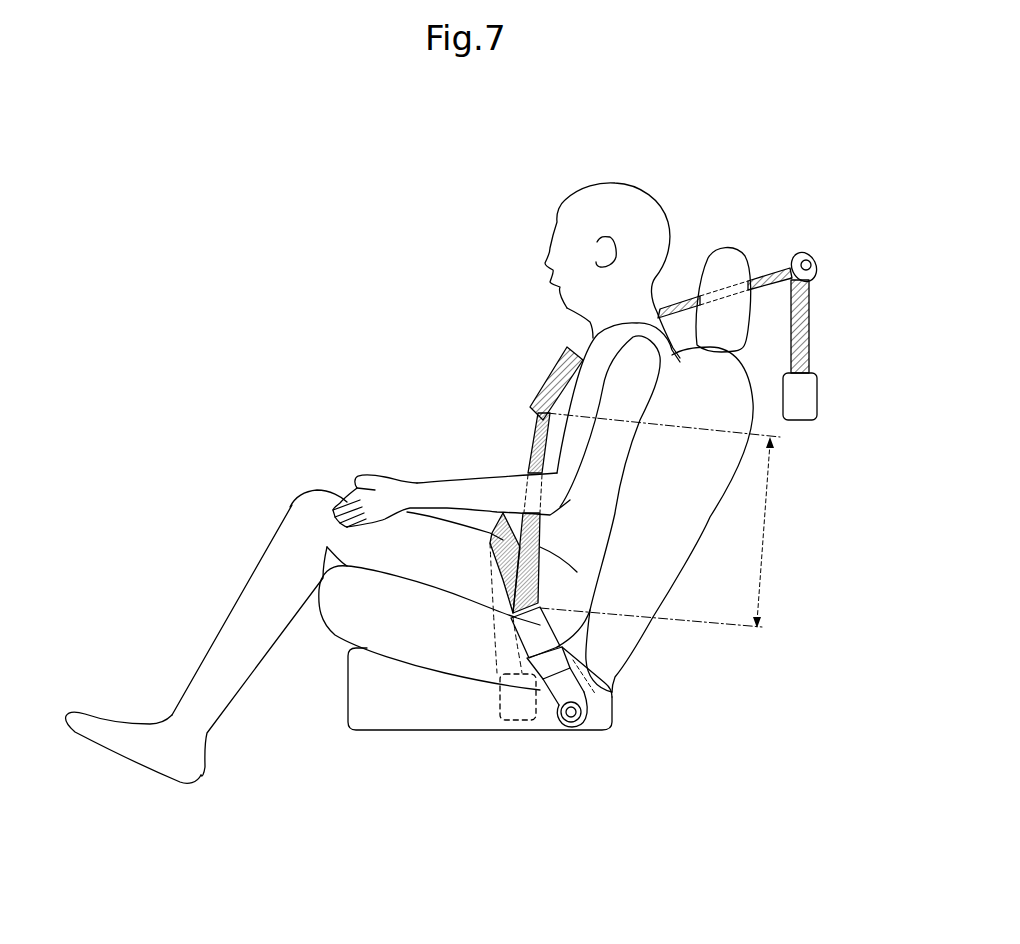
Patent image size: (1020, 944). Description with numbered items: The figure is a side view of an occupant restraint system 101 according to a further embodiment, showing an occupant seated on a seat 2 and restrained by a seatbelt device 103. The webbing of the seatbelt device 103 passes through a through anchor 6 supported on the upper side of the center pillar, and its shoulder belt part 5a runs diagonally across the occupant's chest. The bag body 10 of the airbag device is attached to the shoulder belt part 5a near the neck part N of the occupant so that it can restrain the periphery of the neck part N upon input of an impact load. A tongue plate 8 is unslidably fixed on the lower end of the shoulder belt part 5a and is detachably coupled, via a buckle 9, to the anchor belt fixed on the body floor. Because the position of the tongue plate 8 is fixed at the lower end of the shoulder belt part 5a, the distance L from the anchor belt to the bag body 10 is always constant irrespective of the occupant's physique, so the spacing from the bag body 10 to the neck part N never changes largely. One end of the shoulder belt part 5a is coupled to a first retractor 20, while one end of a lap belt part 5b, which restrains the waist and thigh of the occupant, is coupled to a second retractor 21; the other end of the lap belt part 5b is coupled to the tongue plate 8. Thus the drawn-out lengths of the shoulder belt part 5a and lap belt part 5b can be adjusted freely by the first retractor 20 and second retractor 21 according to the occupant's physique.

The occupant restraint system 101 is at (689, 175).
The seatbelt device 103 is at (795, 256).
The through anchor 6 is at (817, 258).
The first retractor 20 is at (803, 421).
The bag body 10 is at (543, 371).
The shoulder belt part 5a is at (527, 450).
The lap belt part 5b is at (497, 590).
The buckle 9 is at (541, 690).
The tongue plate 8 is at (553, 714).
The second retractor 21 is at (520, 714).
The seat 2 is at (421, 648).
The neck part N is at (592, 322).
The distance L is at (662, 520).